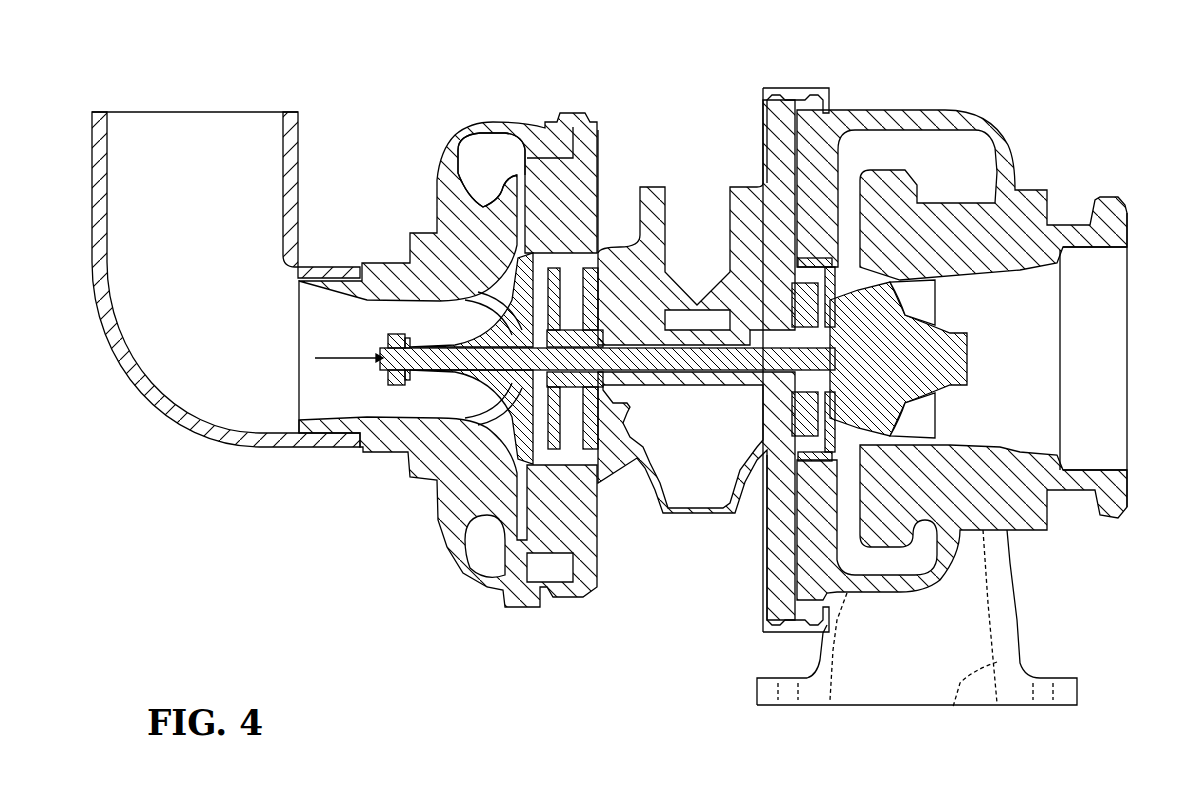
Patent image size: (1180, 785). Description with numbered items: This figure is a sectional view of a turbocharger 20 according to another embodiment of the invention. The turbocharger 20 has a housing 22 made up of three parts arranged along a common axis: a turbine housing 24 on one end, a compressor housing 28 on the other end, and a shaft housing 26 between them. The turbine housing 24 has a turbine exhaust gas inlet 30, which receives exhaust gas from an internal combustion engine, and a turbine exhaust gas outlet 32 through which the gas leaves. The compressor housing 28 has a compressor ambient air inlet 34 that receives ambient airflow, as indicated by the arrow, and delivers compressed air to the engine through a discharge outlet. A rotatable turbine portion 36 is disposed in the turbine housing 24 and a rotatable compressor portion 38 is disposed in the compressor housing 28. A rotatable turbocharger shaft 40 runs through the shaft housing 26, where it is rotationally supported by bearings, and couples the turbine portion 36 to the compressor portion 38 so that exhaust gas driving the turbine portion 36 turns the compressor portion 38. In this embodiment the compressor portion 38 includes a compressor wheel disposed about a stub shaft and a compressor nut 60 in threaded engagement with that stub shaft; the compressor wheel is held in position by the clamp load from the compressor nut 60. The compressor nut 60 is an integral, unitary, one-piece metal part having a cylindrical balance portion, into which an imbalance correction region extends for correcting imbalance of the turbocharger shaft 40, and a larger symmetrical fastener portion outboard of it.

The turbocharger 20 is at (968, 70).
The housing 22 is at (523, 123).
The turbine housing 24 is at (1000, 143).
The shaft housing 26 is at (601, 242).
The compressor housing 28 is at (440, 170).
The turbine exhaust gas inlet 30 is at (980, 700).
The turbine exhaust gas outlet 32 is at (1100, 248).
The compressor ambient air inlet 34 is at (330, 415).
The turbine portion 36 is at (954, 396).
The compressor portion 38 is at (445, 395).
The turbocharger shaft 40 is at (690, 377).
The compressor nut 60 is at (381, 337).